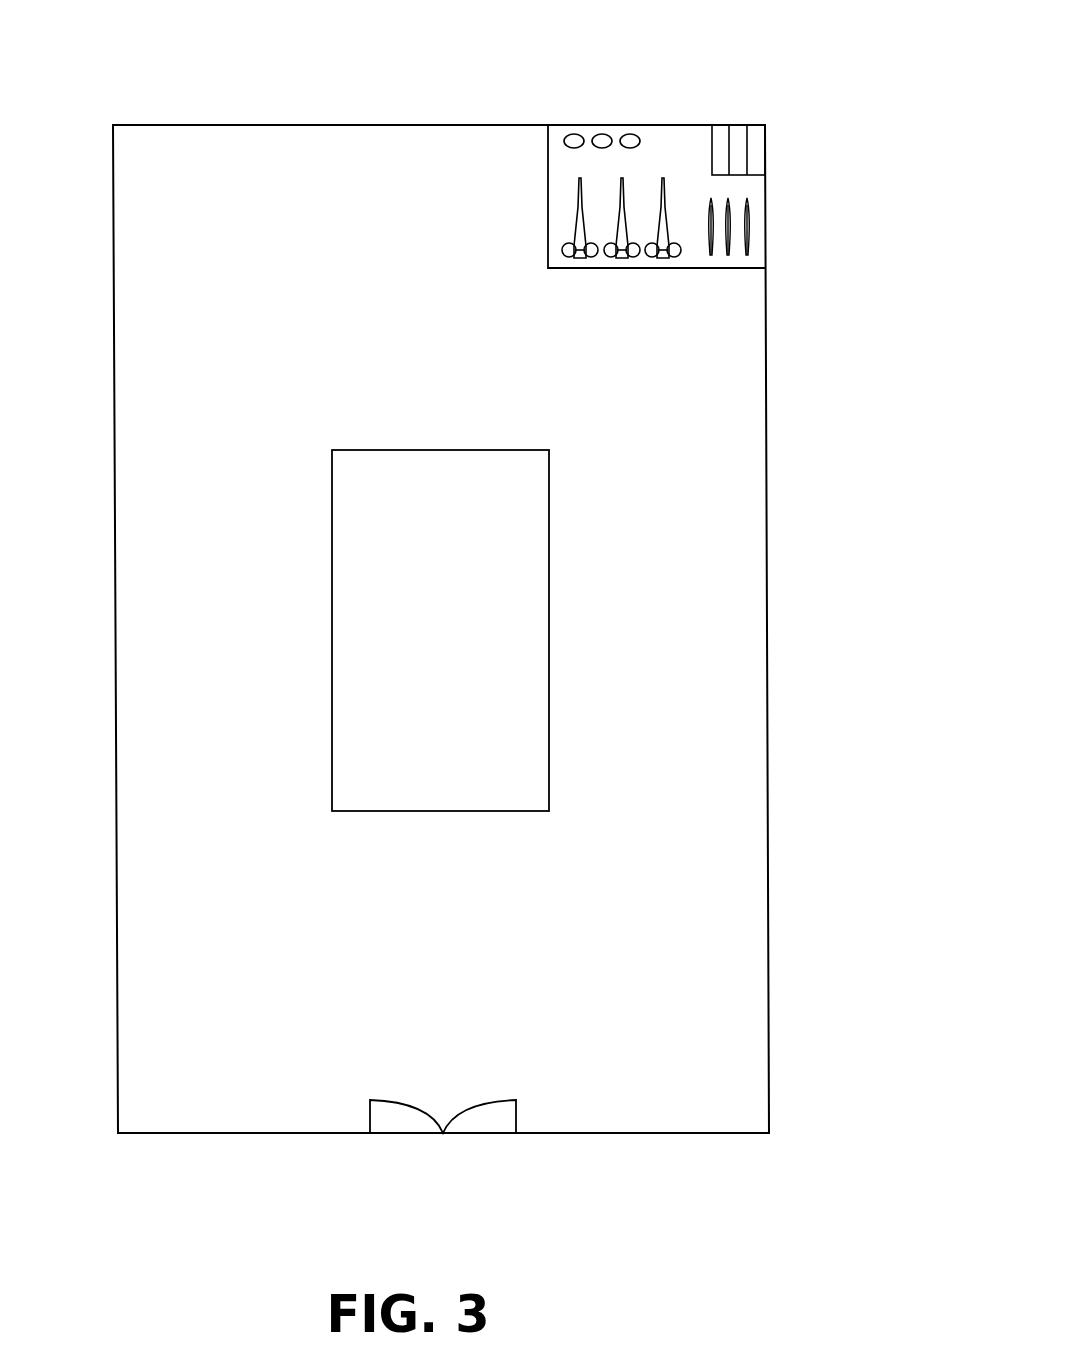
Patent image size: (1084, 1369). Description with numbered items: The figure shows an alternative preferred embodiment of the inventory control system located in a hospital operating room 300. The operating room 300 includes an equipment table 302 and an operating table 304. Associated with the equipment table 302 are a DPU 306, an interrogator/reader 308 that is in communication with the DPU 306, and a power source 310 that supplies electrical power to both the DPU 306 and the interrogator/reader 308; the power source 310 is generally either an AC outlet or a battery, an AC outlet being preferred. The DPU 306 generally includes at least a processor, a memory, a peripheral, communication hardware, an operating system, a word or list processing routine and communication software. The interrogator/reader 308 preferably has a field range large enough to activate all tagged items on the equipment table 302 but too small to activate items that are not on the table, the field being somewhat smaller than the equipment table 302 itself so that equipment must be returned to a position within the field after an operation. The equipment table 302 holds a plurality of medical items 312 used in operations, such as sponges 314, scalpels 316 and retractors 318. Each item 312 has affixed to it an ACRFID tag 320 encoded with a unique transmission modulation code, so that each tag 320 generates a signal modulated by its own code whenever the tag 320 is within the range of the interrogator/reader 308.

The operating room 300 is at (439, 92).
The equipment table 302 is at (565, 161).
The operating table 304 is at (435, 477).
The DPU 306 is at (738, 150).
The interrogator/reader 308 is at (722, 152).
The power source 310 is at (757, 150).
The medical items 312 is at (639, 282).
The sponges 314 is at (602, 140).
The scalpels 316 is at (746, 212).
The retractors 318 is at (575, 227).
The ACRFID tag 320 is at (611, 133).